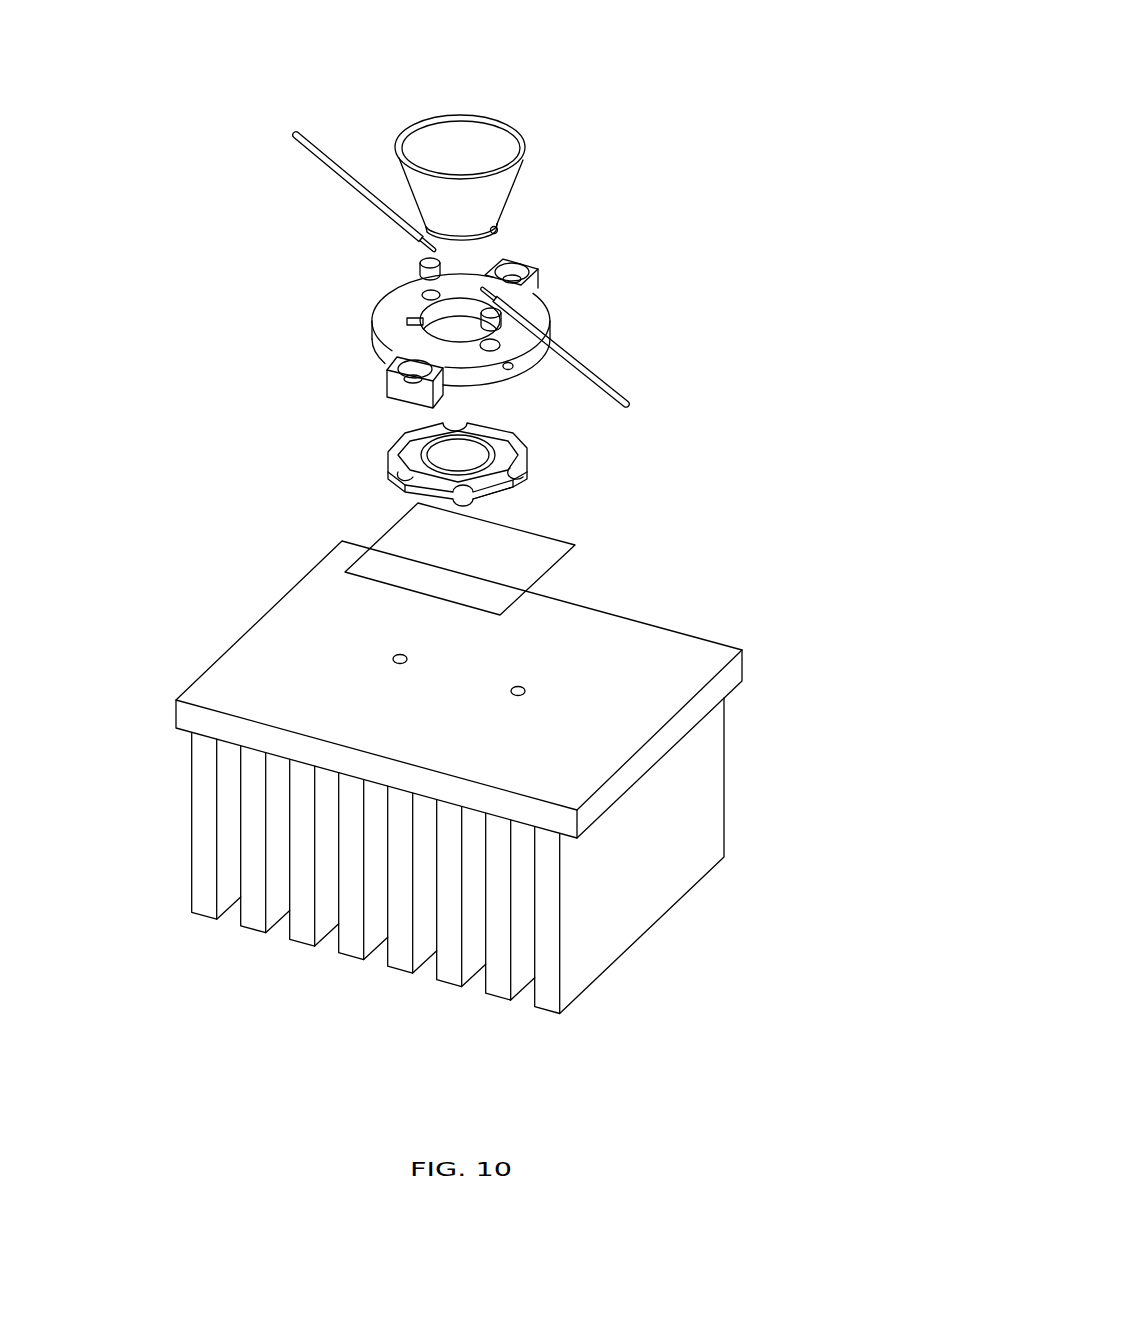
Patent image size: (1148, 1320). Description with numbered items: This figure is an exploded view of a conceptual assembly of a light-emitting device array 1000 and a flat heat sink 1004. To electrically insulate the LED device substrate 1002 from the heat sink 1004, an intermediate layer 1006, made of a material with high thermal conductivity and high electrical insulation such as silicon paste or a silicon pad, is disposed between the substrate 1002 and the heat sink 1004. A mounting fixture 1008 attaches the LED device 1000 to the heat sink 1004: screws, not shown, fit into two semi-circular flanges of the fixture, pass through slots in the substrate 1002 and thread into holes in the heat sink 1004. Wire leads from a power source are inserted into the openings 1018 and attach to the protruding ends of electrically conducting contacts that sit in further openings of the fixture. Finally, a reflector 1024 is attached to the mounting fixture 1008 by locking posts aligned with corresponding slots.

The light-emitting device array 1000 is at (397, 428).
The LED device substrate 1002 is at (518, 500).
The flat heat sink 1004 is at (195, 672).
The intermediate layer 1006 is at (571, 559).
The mounting fixture 1008 is at (397, 277).
The opening 1018 is at (510, 368).
The reflector 1024 is at (395, 134).